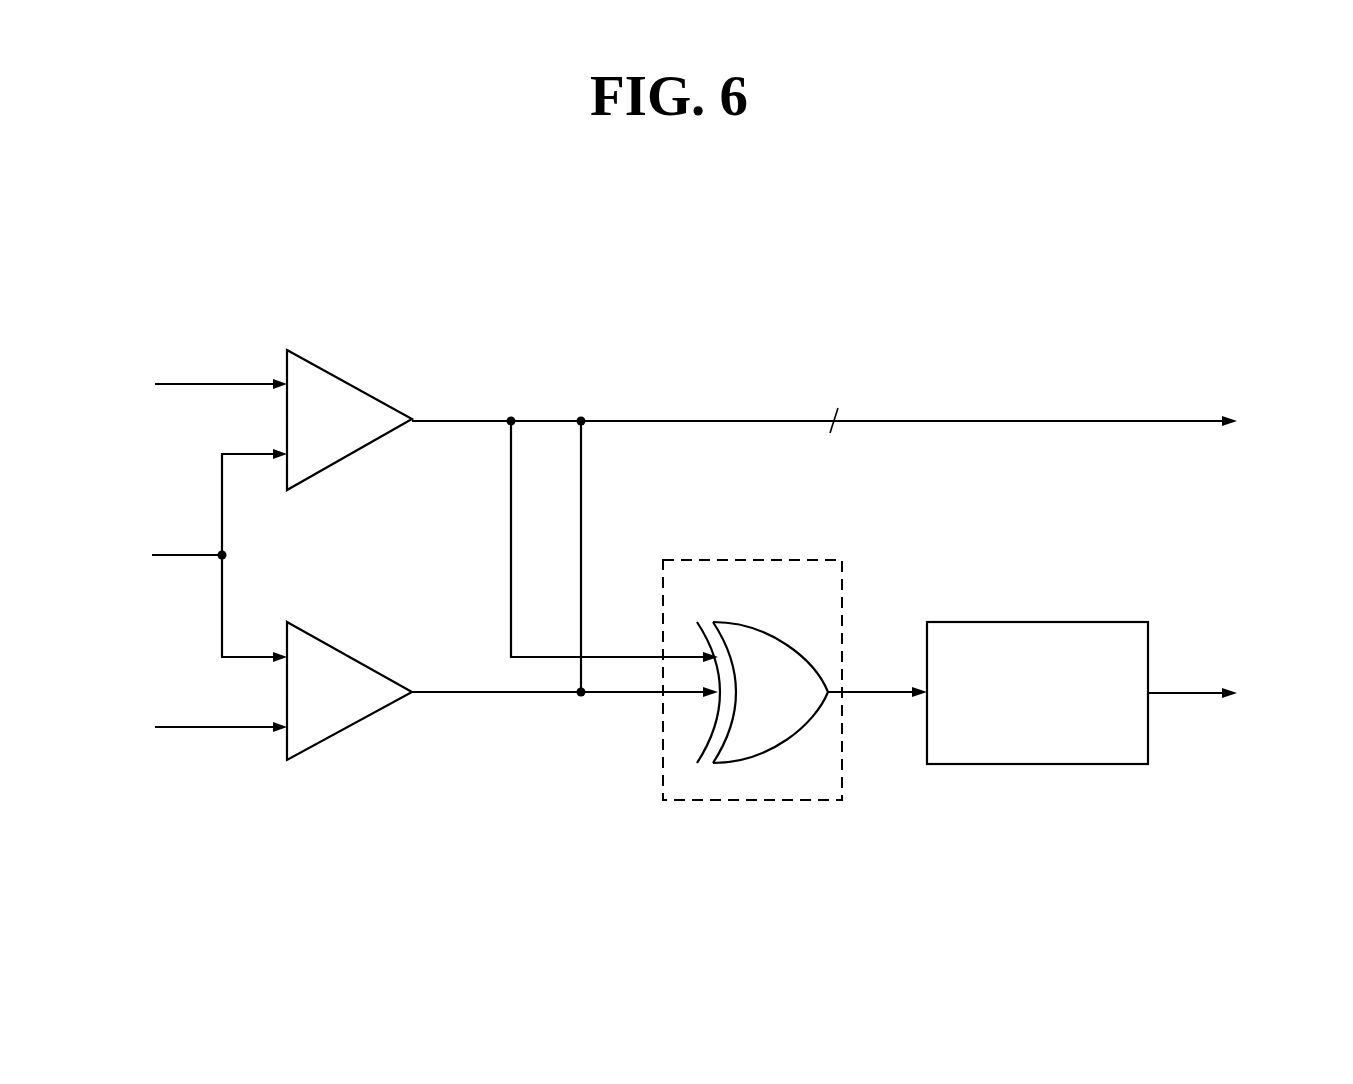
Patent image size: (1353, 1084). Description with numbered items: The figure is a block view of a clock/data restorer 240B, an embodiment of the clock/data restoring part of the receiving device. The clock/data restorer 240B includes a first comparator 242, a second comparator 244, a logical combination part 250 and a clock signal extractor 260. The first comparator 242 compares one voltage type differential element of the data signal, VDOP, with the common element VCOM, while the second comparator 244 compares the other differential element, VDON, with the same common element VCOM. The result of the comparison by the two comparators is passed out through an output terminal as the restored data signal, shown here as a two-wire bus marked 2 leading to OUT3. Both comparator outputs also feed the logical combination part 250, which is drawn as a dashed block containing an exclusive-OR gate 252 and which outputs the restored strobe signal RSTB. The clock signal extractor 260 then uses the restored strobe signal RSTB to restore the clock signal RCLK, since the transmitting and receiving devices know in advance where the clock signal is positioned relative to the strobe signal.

The clock/data restorer 240B is at (1177, 298).
The first comparator 242 is at (333, 385).
The second comparator 244 is at (331, 656).
The logical combination part 250 is at (751, 560).
The XOR gate 252 is at (740, 750).
The clock signal extractor 260 is at (1036, 622).
The bus width indicator 2 is at (834, 404).